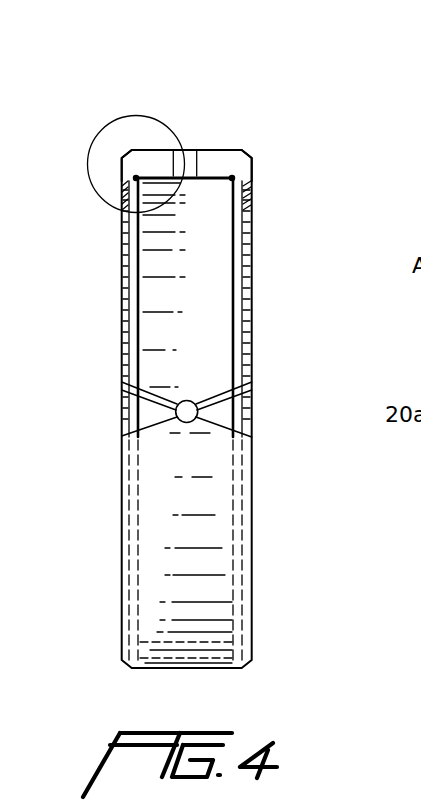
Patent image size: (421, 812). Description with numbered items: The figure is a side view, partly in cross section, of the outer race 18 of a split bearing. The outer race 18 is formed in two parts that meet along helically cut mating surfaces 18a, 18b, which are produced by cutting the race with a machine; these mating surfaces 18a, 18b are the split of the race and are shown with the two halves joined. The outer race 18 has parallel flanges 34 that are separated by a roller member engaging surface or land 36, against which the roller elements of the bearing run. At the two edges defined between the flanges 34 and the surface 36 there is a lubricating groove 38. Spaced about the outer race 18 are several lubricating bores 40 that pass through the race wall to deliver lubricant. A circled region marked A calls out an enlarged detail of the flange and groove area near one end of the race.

The outer race 18 is at (248, 562).
The helically cut mating surface 18a is at (152, 432).
The helically cut mating surface 18b is at (243, 453).
The parallel flanges 34 is at (252, 170).
The roller member engaging surface or land 36 is at (215, 183).
The lubricating groove 38 is at (141, 167).
The lubricating bores 40 is at (190, 160).
The detail circle A is at (100, 133).